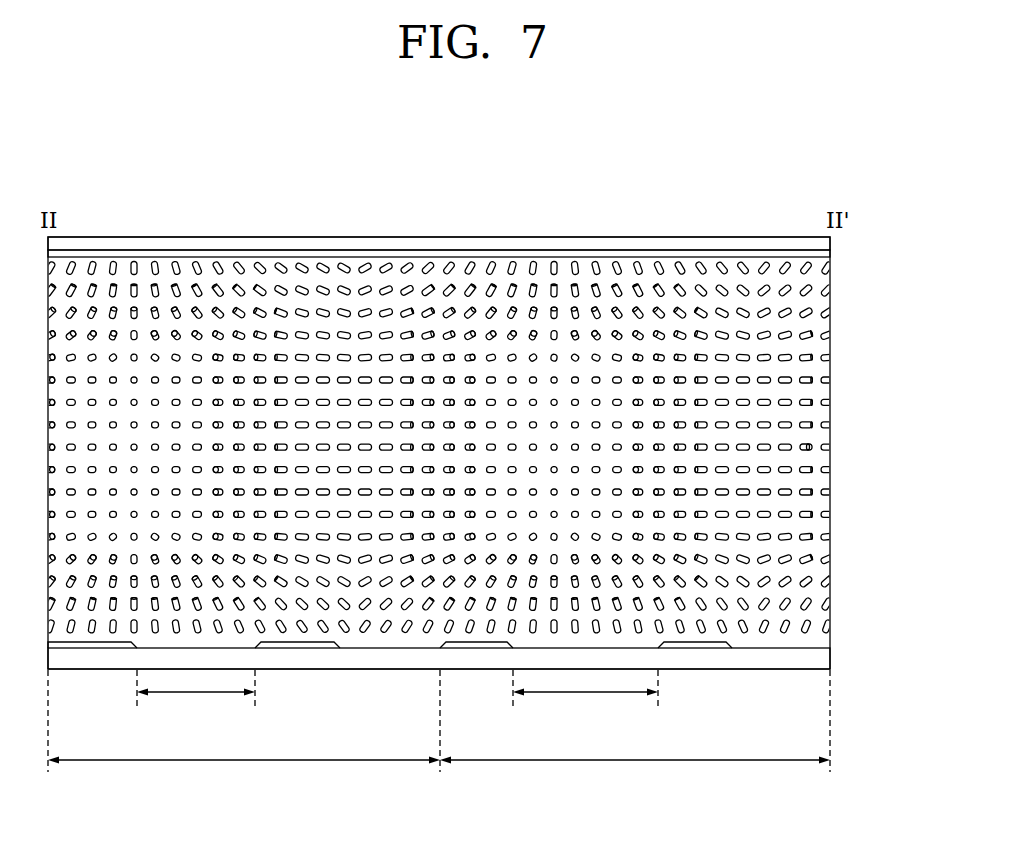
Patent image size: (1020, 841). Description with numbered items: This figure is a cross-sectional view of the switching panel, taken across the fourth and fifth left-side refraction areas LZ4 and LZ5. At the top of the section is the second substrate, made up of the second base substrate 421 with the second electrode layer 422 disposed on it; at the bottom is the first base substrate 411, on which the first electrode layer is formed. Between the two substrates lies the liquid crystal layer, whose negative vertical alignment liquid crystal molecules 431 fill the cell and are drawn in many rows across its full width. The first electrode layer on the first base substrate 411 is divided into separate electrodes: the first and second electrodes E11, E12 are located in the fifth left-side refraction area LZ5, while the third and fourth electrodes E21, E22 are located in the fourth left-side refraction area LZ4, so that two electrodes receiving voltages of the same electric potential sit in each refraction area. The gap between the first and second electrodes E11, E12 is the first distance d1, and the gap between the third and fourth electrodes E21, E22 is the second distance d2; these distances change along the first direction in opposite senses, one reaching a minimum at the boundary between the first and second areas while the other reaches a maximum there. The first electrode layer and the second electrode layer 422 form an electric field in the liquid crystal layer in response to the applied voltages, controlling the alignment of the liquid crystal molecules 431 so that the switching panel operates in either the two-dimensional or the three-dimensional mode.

The second base substrate 421 is at (830, 242).
The second electrode layer 422 is at (830, 257).
The liquid crystal molecules 431 is at (808, 447).
The first base substrate 411 is at (830, 660).
The first electrode E11 is at (92, 648).
The second electrode E12 is at (298, 648).
The third electrode E21 is at (477, 648).
The fourth electrode E22 is at (697, 648).
The first distance d1 is at (196, 696).
The second distance d2 is at (585, 696).
The fifth left-side refraction area LZ5 is at (244, 729).
The fourth left-side refraction area LZ4 is at (635, 729).